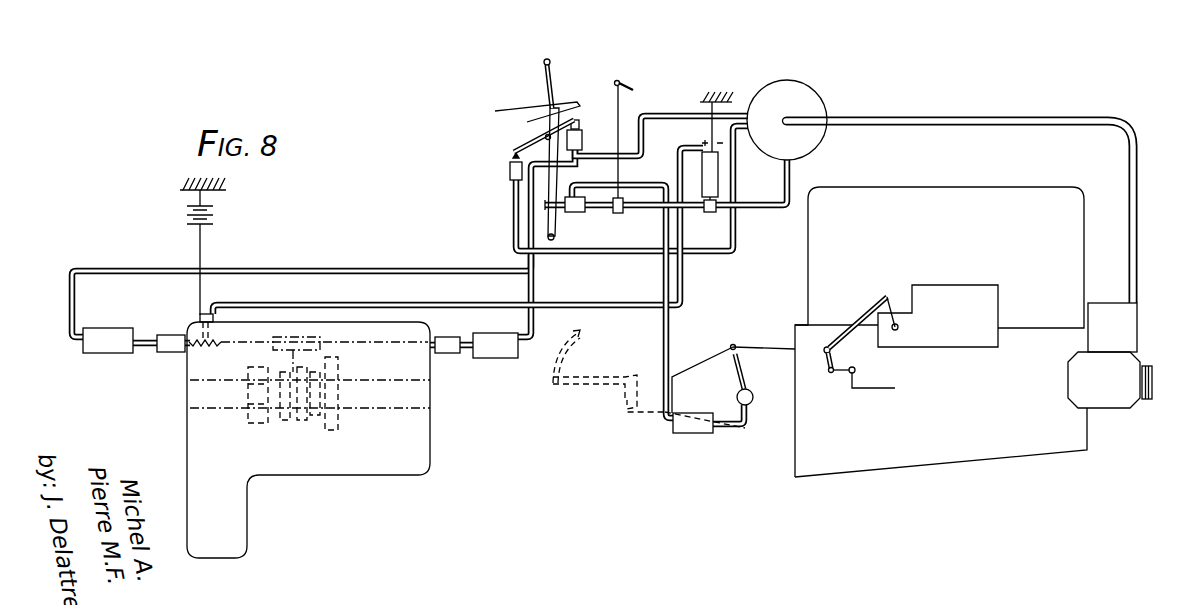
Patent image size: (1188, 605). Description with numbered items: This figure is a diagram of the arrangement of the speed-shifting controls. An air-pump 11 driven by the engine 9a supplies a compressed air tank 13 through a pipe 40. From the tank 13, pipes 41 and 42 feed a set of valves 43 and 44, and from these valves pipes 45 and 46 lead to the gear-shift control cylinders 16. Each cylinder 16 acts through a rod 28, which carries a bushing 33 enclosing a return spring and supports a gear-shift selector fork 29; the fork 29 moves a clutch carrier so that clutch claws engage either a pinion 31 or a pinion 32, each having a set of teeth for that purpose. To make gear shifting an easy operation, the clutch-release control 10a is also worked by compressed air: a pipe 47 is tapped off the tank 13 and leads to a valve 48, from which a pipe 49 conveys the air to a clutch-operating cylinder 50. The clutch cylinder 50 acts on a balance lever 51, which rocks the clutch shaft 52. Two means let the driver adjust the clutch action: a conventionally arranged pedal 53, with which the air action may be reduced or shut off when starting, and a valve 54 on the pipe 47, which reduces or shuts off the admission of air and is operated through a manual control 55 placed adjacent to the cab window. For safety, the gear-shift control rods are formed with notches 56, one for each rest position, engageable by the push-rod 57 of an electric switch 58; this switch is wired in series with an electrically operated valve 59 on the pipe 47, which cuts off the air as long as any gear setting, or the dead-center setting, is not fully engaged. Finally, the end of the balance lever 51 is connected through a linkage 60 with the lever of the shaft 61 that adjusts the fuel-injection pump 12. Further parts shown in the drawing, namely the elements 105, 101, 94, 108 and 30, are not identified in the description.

The pedal plate 105 is at (540, 112).
The link rod 101 is at (530, 140).
The control lever 94 is at (549, 82).
The pivoted lever 108 is at (556, 150).
The manual control 55 is at (623, 82).
The pipe 41 is at (678, 112).
The electrically operated valve 59 is at (712, 130).
The compressed air tank 13 is at (815, 102).
The pipe 40 is at (977, 116).
The valve 43 is at (574, 143).
The pipe 49 is at (645, 183).
The pipe 42 is at (734, 177).
The valve 44 is at (512, 175).
The valve 48 is at (574, 213).
The valve 54 is at (615, 214).
The pipe 47 is at (766, 210).
The pipe 46 is at (215, 337).
The electric switch 58 is at (205, 312).
The push-rod 57 is at (210, 327).
The notches 56 is at (218, 342).
The gear-shift selector fork 29 is at (298, 370).
The control rod 28 is at (393, 348).
The bushing 33 is at (173, 343).
The gear-shift control cylinder 16 is at (100, 347).
The pipe 45 is at (536, 318).
The pinion 31 is at (247, 428).
The clutch discs 30 is at (290, 412).
The pinion 32 is at (332, 427).
The pedal 53 is at (592, 385).
The clutch-operating cylinder 50 is at (685, 428).
The balance lever 51 is at (737, 422).
The clutch shaft 52 is at (736, 350).
The linkage 60 is at (758, 345).
The clutch-release control 10a is at (782, 340).
The shaft 61 is at (897, 325).
The fuel-injection pump 12 is at (958, 300).
The engine 9a is at (1060, 275).
The air-pump 11 is at (1113, 335).